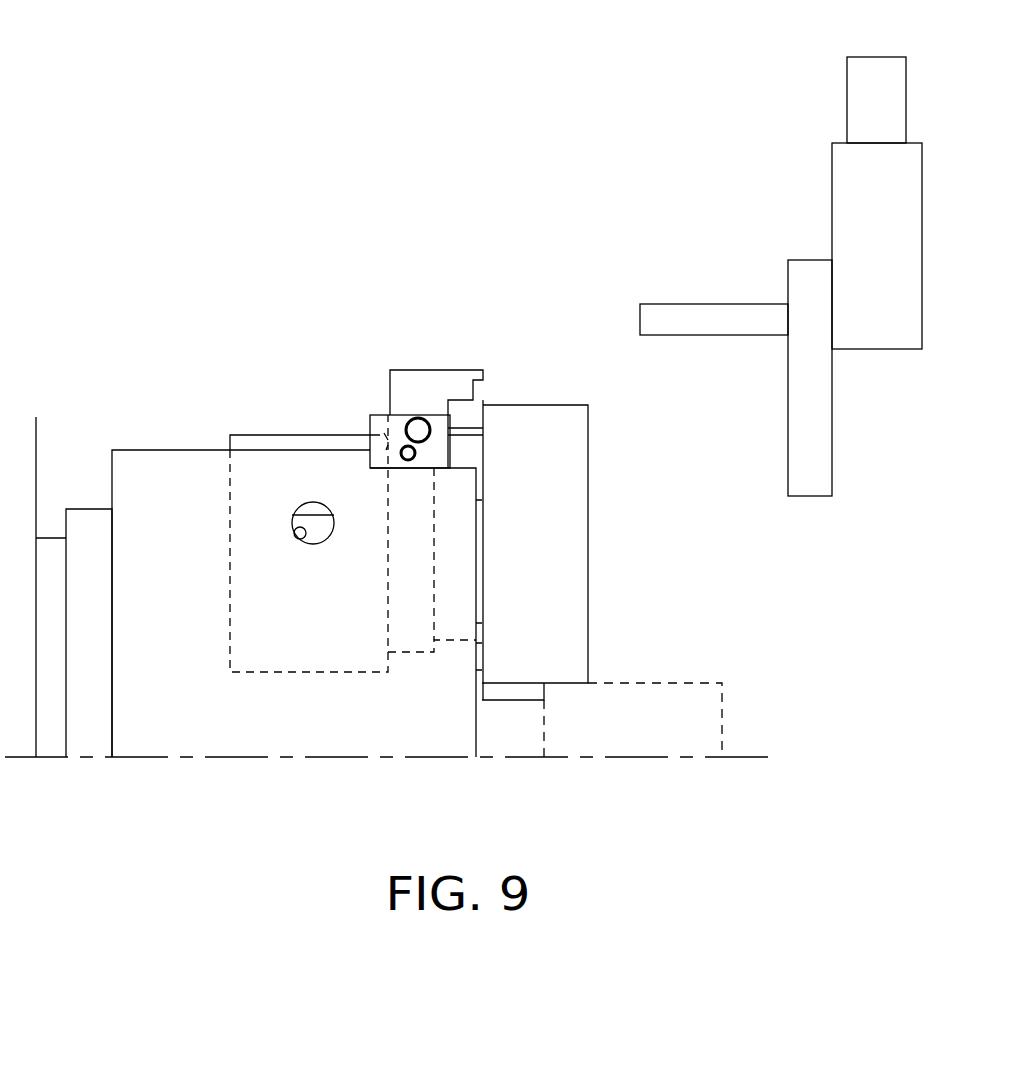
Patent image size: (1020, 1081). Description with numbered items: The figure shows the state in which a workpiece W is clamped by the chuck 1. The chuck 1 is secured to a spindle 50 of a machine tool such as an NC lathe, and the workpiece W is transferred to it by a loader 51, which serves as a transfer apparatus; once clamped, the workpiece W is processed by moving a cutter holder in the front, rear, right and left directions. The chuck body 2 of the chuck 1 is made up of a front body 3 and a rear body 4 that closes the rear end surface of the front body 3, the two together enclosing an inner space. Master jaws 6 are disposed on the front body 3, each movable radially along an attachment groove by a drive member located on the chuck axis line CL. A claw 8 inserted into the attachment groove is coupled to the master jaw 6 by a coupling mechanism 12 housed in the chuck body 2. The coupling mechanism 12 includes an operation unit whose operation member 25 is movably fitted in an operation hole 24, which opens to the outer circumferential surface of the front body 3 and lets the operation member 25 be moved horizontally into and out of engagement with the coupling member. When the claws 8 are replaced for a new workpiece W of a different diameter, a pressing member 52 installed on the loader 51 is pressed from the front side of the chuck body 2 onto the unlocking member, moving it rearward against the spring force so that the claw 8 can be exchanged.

The chuck 1 is at (215, 215).
The chuck body 2 is at (161, 448).
The front body 3 is at (205, 450).
The rear body 4 is at (85, 509).
The master jaw 6 is at (330, 436).
The claw 8 is at (535, 400).
The coupling mechanism 12 is at (303, 463).
The operation hole 24 is at (295, 534).
The operation member 25 is at (310, 544).
The spindle 50 is at (37, 445).
The loader 51 is at (871, 60).
The pressing member 52 is at (681, 310).
The workpiece W is at (657, 683).
The chuck axis line CL is at (744, 757).